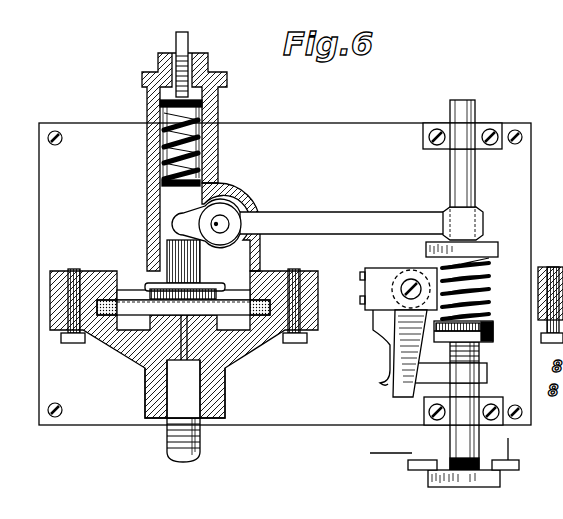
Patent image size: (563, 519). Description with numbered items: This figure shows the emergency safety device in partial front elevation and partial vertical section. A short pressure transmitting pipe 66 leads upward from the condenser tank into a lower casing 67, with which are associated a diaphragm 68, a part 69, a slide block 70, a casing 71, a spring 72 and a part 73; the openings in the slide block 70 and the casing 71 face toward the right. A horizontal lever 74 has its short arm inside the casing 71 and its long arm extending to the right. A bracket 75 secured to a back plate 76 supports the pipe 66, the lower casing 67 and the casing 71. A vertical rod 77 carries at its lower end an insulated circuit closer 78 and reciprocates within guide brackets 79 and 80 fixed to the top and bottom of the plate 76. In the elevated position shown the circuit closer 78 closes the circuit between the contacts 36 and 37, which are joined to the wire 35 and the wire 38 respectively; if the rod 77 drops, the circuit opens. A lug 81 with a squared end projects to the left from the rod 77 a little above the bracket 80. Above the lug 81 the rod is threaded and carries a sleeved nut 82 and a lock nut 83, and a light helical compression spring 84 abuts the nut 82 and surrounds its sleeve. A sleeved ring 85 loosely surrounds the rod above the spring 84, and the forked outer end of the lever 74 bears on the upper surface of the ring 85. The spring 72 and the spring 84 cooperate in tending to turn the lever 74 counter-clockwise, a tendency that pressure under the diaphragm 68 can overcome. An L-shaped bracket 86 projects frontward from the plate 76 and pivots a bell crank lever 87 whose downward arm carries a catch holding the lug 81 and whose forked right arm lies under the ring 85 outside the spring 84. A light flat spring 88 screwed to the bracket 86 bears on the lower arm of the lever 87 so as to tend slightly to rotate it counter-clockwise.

The wire 35 is at (510, 450).
The contact 36 is at (508, 472).
The contact 37 is at (420, 470).
The wire 38 is at (387, 455).
The pressure transmitting pipe 66 is at (200, 440).
The lower casing 67 is at (245, 340).
The diaphragm 68 is at (233, 302).
The part 69 is at (160, 268).
The slide block 70 is at (174, 207).
The casing 71 is at (213, 115).
The spring 72 is at (213, 151).
The part 73 is at (176, 40).
The horizontal lever 74 is at (339, 222).
The bracket 75 is at (148, 392).
The back plate 76 is at (333, 128).
The vertical rod 77 is at (450, 110).
The circuit closer 78 is at (476, 484).
The guide bracket 79 is at (490, 127).
The guide bracket 80 is at (500, 398).
The lug 81 is at (430, 374).
The sleeved nut 82 is at (493, 330).
The lock nut 83 is at (495, 336).
The helical compression spring 84 is at (492, 299).
The sleeved ring 85 is at (426, 250).
The L-shaped bracket 86 is at (378, 300).
The bell crank lever 87 is at (405, 325).
The flat spring 88 is at (380, 384).